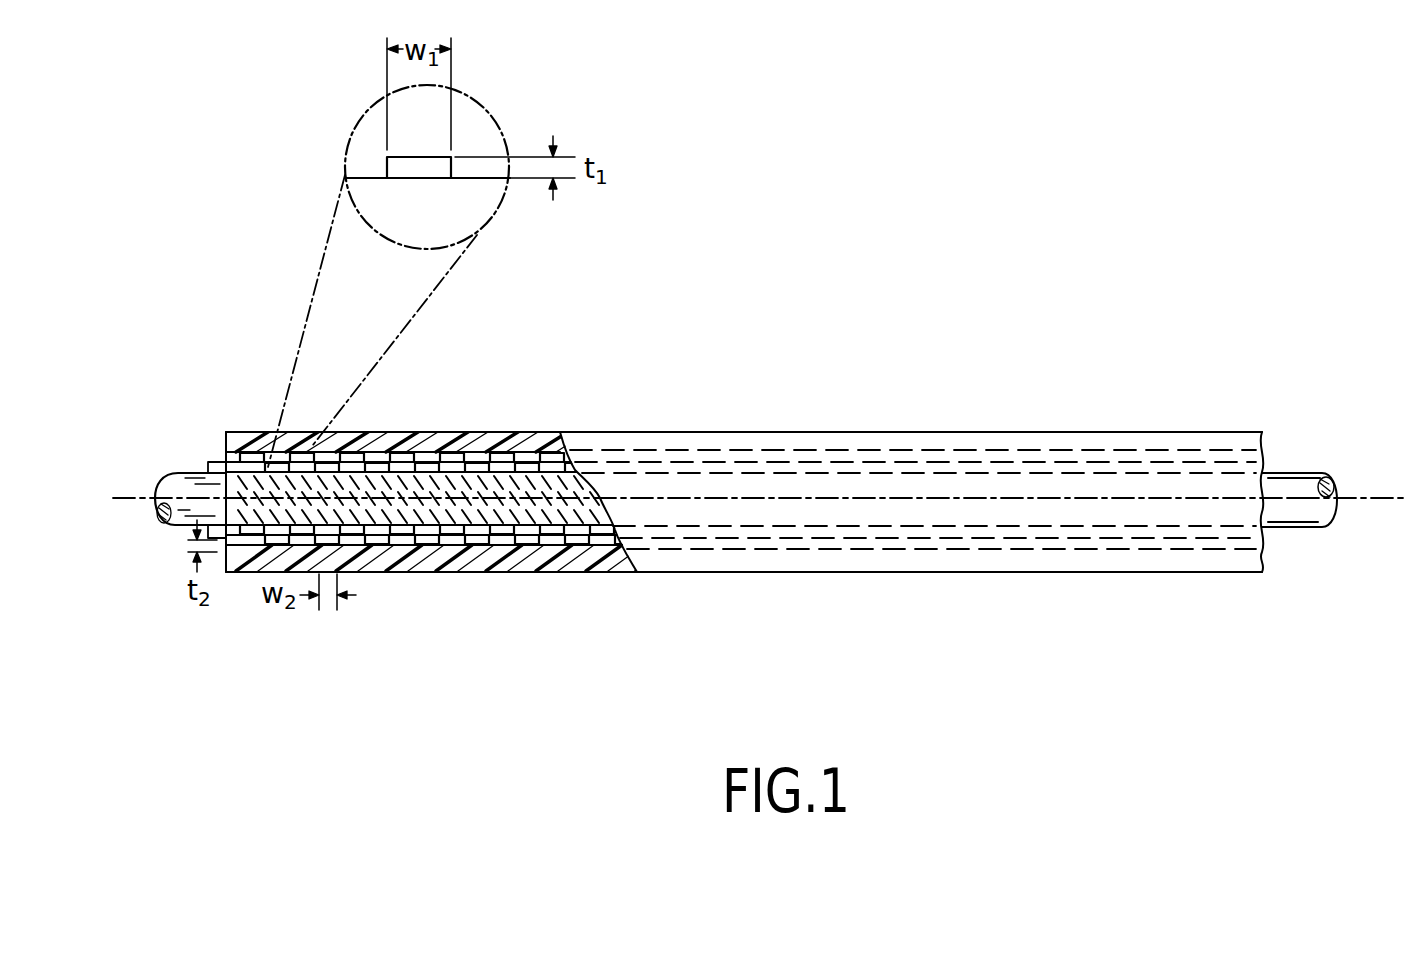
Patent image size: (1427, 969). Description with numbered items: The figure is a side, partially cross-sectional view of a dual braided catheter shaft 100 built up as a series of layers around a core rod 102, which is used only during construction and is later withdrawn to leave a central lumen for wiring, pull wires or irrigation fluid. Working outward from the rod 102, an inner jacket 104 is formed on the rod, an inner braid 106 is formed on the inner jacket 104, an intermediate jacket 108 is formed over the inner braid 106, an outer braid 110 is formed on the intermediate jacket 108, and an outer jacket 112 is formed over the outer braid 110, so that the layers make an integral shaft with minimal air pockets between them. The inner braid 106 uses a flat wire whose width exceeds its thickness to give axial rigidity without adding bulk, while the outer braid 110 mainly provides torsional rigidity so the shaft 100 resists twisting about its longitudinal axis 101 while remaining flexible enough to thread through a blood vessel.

The dual braided catheter shaft 100 is at (1062, 157).
The longitudinal axis 101 is at (1381, 500).
The core rod 102 is at (1294, 466).
The inner jacket 104 is at (213, 463).
The inner braid 106 is at (228, 486).
The intermediate jacket 108 is at (227, 463).
The outer braid 110 is at (390, 542).
The outer jacket 112 is at (533, 436).